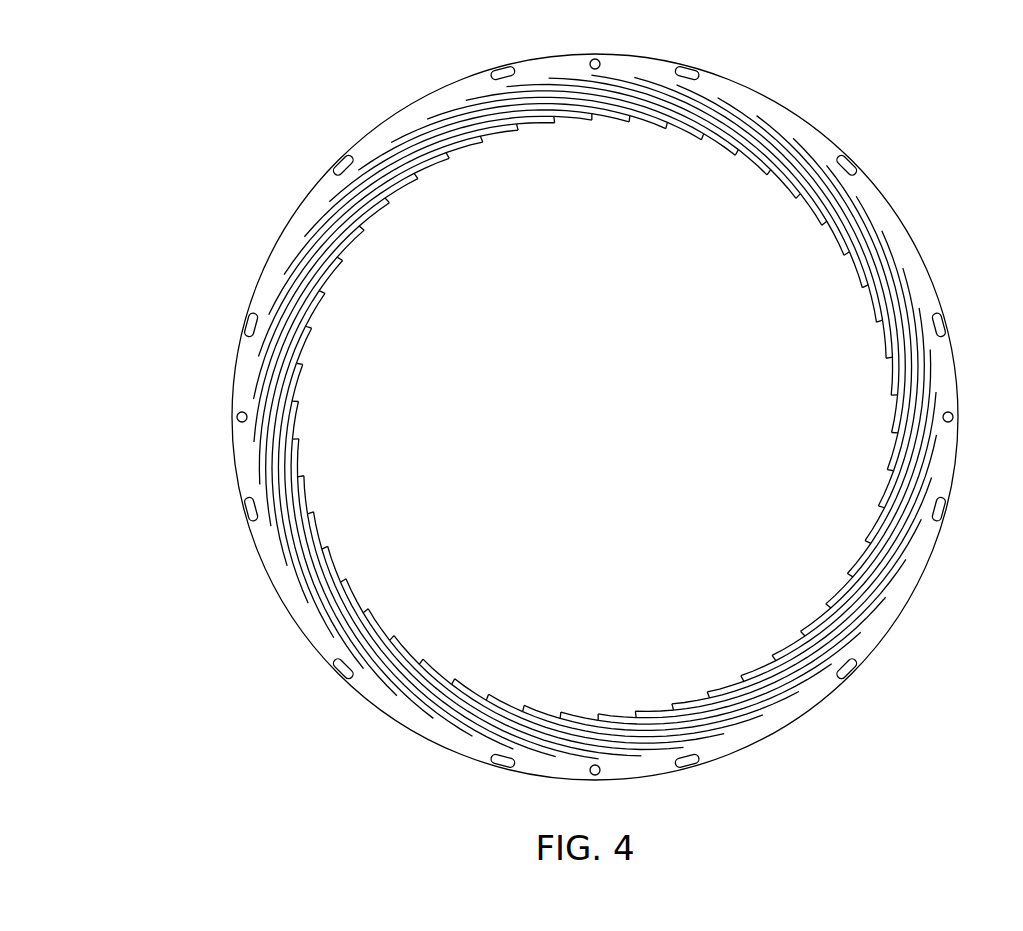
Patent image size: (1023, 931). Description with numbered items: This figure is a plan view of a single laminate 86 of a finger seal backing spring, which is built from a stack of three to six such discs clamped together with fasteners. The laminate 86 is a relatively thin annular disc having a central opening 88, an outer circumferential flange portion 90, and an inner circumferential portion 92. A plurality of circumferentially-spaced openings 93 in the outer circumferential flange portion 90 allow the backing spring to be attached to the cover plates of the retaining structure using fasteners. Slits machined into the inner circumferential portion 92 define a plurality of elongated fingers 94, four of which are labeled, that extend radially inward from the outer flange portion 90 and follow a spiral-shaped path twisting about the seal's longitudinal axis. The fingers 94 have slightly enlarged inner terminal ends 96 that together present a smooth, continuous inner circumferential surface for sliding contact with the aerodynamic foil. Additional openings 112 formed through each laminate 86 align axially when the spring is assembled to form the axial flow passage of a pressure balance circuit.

The laminate 86 is at (248, 194).
The central opening 88 is at (582, 427).
The outer circumferential flange portion 90 is at (232, 370).
The inner circumferential portion 92 is at (503, 140).
The circumferentially-spaced openings 93 is at (593, 58).
The elongated fingers 94 is at (460, 105).
The inner terminal ends 96 is at (345, 248).
The openings 112 is at (493, 72).